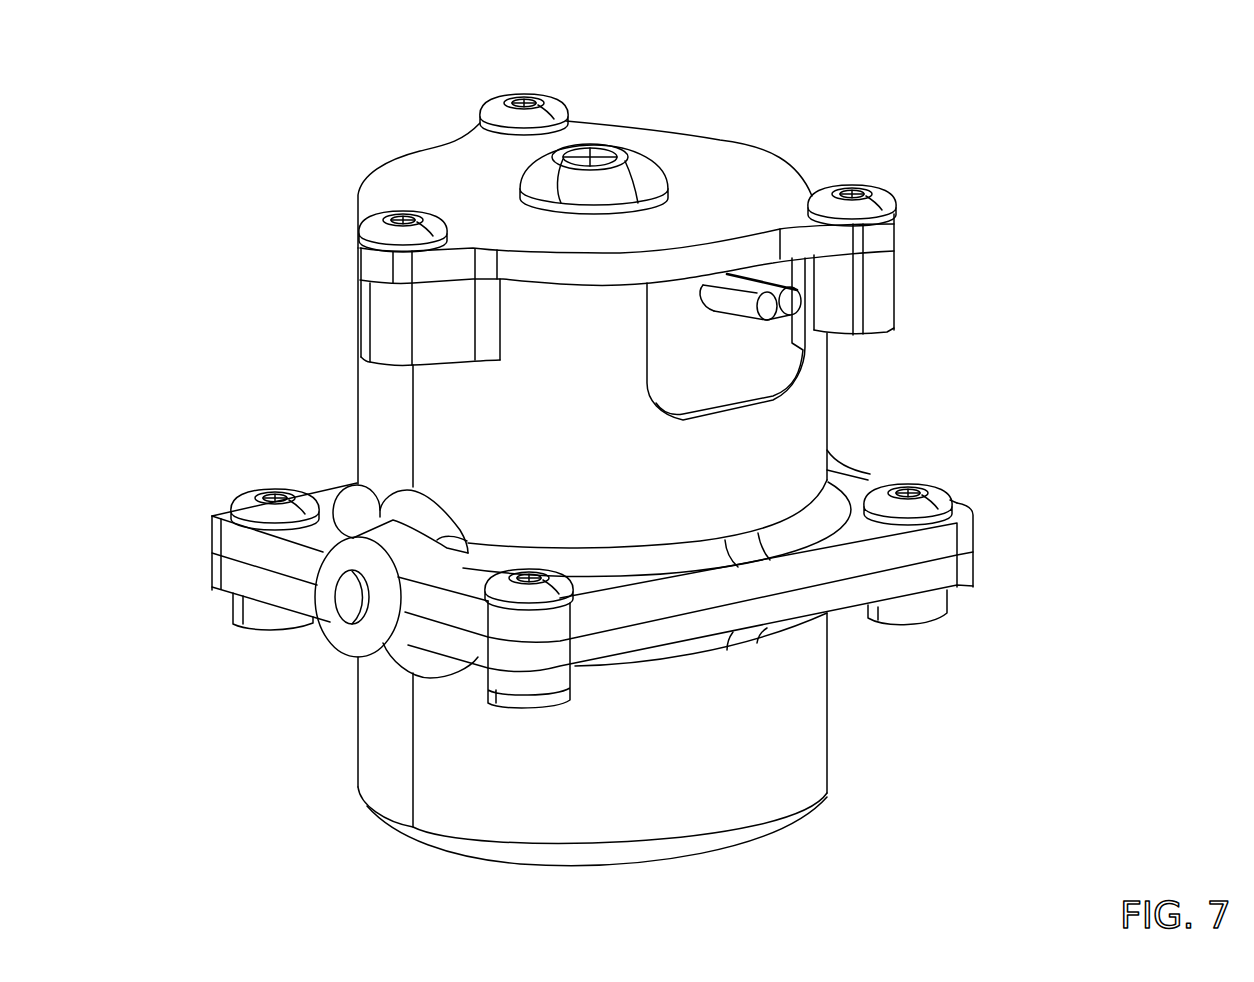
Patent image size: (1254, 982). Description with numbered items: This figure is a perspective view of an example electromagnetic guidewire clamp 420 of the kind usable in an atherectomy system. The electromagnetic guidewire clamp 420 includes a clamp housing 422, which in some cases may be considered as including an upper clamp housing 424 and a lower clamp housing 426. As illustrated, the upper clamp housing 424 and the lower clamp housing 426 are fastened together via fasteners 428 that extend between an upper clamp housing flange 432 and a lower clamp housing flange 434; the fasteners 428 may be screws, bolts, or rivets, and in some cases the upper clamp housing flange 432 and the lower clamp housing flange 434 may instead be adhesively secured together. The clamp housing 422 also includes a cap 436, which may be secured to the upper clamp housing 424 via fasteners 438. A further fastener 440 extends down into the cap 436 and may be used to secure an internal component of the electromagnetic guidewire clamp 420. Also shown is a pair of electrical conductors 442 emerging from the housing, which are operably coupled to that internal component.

The electromagnetic guidewire clamp 420 is at (953, 127).
The clamp housing 422 is at (993, 380).
The upper clamp housing 424 is at (370, 398).
The lower clamp housing 426 is at (373, 738).
The fasteners 428 is at (250, 503).
The upper clamp housing flange 432 is at (940, 540).
The lower clamp housing flange 434 is at (843, 593).
The cap 436 is at (743, 160).
The fasteners 438 is at (495, 113).
The fastener 440 is at (620, 150).
The electrical conductors 442 is at (809, 291).